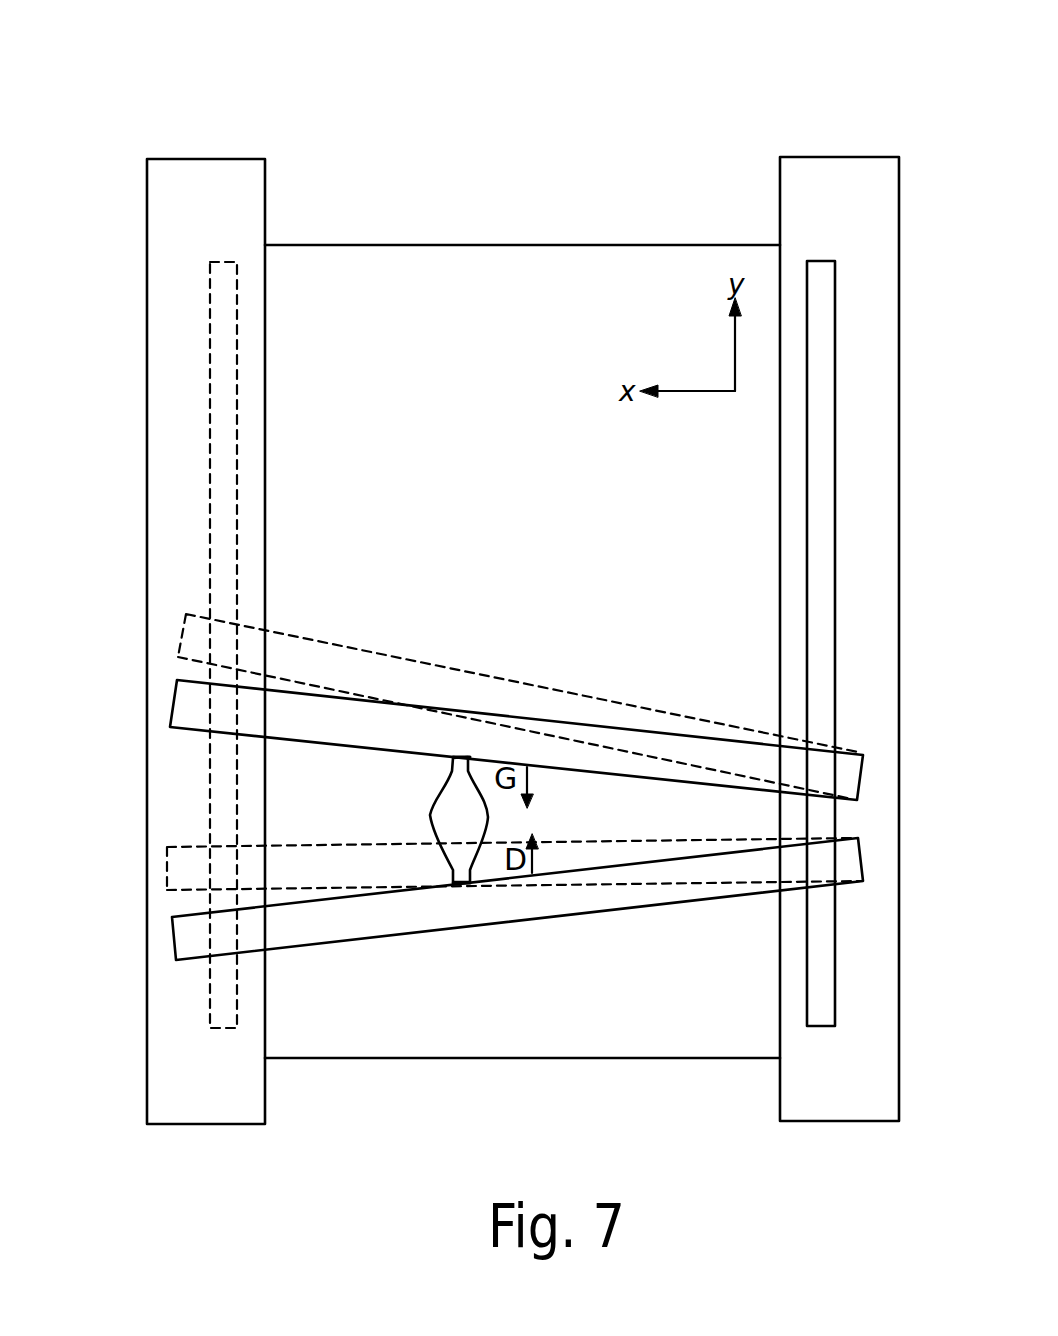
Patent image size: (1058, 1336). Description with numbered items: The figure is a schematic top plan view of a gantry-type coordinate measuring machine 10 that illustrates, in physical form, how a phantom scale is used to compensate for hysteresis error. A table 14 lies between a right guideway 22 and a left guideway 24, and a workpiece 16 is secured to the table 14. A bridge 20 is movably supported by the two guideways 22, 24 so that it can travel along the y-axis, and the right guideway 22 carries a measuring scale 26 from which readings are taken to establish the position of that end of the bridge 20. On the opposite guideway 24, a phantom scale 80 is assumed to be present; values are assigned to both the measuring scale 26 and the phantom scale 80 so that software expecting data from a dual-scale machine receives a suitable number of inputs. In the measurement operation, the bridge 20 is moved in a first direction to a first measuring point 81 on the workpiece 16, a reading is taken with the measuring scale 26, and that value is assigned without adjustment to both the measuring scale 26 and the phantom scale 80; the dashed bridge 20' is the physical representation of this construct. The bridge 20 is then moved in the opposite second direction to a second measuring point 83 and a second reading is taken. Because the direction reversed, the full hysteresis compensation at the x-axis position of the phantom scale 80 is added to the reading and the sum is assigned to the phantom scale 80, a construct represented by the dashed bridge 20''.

The coordinate measuring machine 10 is at (716, 111).
The table 14 is at (557, 302).
The workpiece 16 is at (459, 819).
The bridge 20 is at (457, 812).
The dashed bridge 20' is at (450, 852).
The dashed bridge 20'' is at (451, 690).
The right guideway 22 is at (840, 168).
The left guideway 24 is at (190, 175).
The measuring scale 26 is at (822, 277).
The phantom scale 80 is at (220, 278).
The first measuring point 81 is at (470, 885).
The second measuring point 83 is at (470, 757).